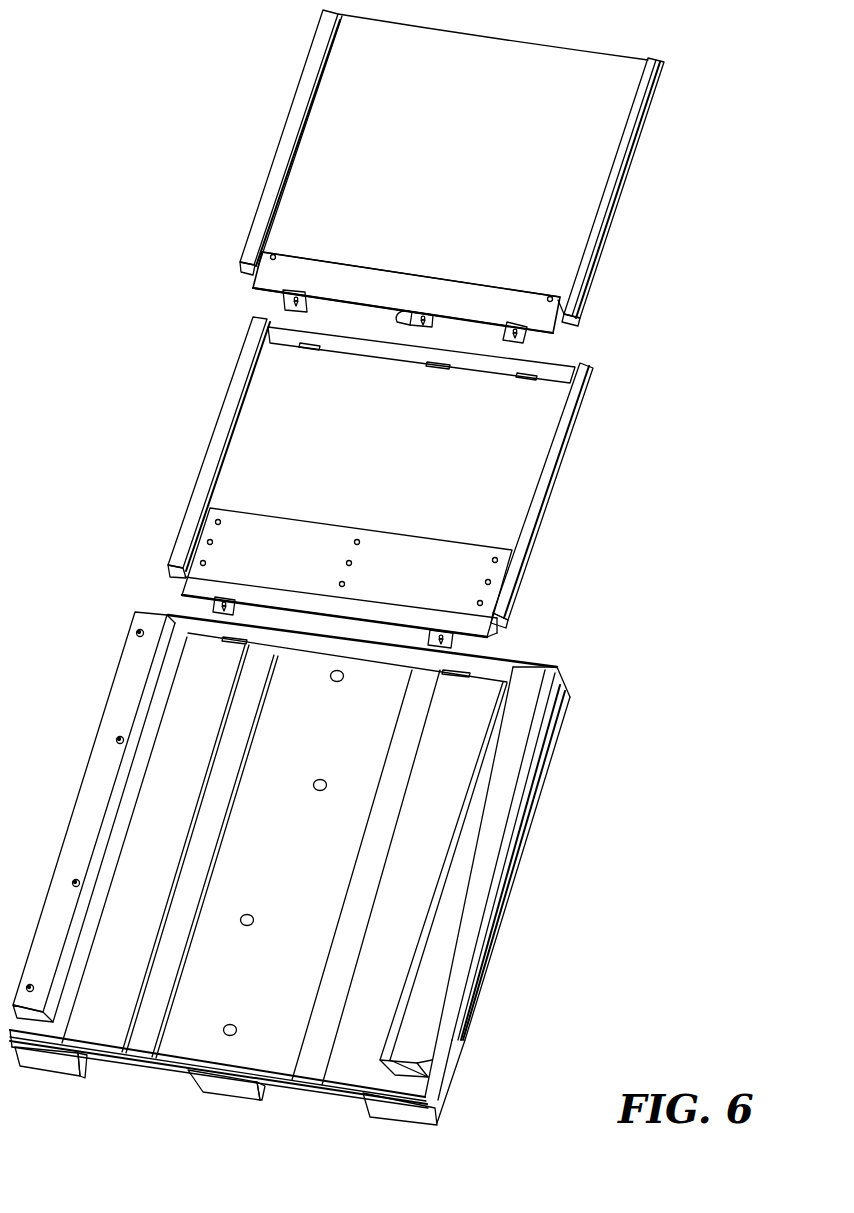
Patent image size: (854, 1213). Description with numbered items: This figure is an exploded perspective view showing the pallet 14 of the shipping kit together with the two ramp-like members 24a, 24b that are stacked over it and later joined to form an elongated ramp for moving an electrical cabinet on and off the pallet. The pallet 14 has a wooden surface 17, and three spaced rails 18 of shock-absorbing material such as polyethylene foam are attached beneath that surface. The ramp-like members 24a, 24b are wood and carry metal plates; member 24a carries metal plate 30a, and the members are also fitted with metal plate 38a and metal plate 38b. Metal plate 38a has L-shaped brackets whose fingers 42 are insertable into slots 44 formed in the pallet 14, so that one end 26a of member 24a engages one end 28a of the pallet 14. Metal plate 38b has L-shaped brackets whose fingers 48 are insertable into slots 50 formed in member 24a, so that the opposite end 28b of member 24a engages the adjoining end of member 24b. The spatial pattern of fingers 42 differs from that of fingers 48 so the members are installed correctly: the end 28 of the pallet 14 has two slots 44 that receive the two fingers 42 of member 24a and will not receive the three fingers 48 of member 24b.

The pallet 14 is at (533, 820).
The wooden surface 17 is at (301, 864).
The rails 18 is at (375, 1103).
The ramp-like member 24a is at (575, 433).
The ramp-like member 24b is at (613, 228).
The end of ramp-like member 26a is at (497, 633).
The end of pallet 28 is at (557, 665).
The end of pallet 28a is at (287, 640).
The opposite end of ramp-like member 28b is at (592, 368).
The metal plate 30a is at (287, 262).
The metal plate 38a is at (288, 564).
The metal plate 38b is at (518, 298).
The fingers 42 is at (213, 607).
The slots 44 is at (224, 642).
The fingers 48 is at (505, 336).
The slots 50 is at (518, 379).